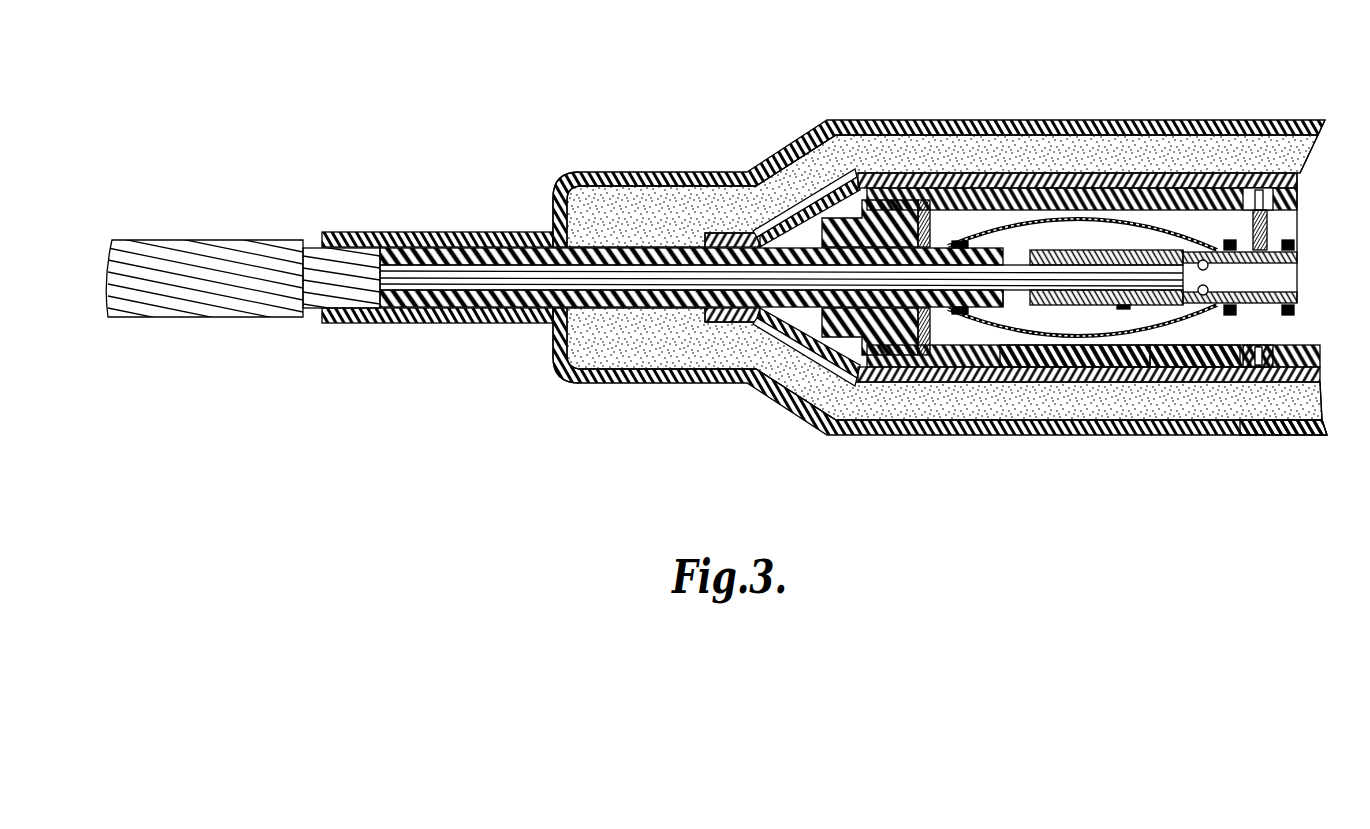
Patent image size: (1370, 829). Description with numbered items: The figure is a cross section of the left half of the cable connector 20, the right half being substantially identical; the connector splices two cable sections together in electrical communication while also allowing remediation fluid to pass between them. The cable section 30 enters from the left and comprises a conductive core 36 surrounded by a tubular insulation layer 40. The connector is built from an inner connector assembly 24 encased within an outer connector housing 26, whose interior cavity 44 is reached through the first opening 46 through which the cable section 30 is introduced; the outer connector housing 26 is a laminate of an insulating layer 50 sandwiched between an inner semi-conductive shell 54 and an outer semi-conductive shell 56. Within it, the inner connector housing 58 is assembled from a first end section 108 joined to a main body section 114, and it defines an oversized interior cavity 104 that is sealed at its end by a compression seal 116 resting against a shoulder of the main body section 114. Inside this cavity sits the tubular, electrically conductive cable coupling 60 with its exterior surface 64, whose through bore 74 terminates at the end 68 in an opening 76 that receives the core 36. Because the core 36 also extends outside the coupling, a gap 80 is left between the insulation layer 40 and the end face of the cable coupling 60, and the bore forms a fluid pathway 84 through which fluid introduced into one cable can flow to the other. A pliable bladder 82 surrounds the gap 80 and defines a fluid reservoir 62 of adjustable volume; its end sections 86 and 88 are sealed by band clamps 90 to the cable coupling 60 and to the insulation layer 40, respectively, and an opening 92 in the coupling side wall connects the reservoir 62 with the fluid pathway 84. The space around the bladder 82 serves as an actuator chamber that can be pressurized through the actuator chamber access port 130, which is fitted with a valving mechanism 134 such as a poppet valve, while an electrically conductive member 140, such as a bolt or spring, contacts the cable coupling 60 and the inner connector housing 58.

The cable connector 20 is at (384, 128).
The inner connector assembly 24 is at (811, 231).
The outer connector housing 26 is at (740, 167).
The cable section 30 is at (208, 237).
The conductive core 36 is at (407, 283).
The insulation layer 40 is at (470, 300).
The interior cavity 44 is at (780, 365).
The first opening 46 is at (433, 250).
The insulating layer 50 is at (614, 350).
The inner semi-conductive shell 54 is at (700, 233).
The outer semi-conductive shell 56 is at (557, 353).
The inner connector housing 58 is at (1303, 196).
The cable coupling 60 is at (1172, 248).
The fluid reservoir 62 is at (1103, 312).
The exterior surface 64 is at (1098, 230).
The end 68 is at (1042, 245).
The through bore 74 is at (1287, 278).
The opening 76 is at (1070, 306).
The gap 80 is at (1018, 297).
The bladder 82 is at (1145, 332).
The fluid pathway 84 is at (1280, 278).
The end section 86 is at (1247, 248).
The end section 88 is at (982, 311).
The band clamp 90 is at (966, 242).
The opening 92 is at (1205, 248).
The interior cavity 104 is at (1225, 365).
The first end section 108 is at (843, 368).
The main body section 114 is at (948, 352).
The compression seal 116 is at (943, 222).
The actuator chamber access port 130 is at (1268, 367).
The valving mechanism 134 is at (1267, 345).
The electrically conductive member 140 is at (1265, 225).